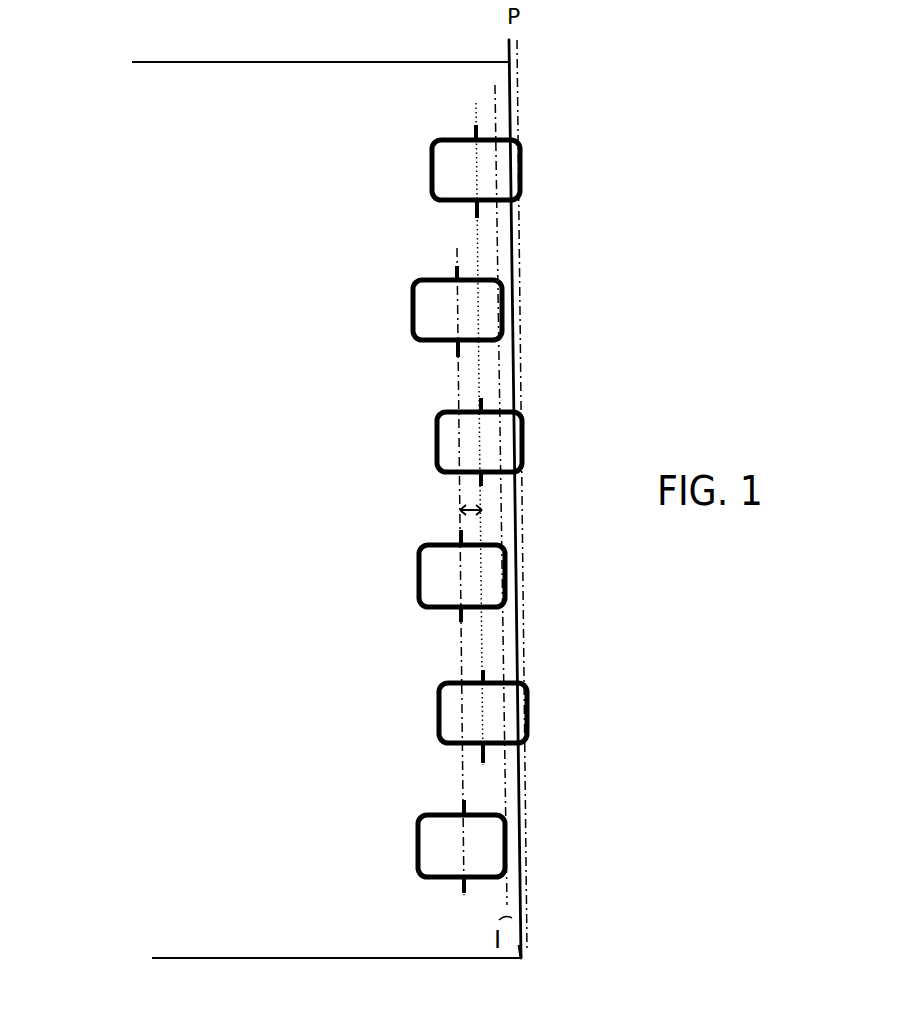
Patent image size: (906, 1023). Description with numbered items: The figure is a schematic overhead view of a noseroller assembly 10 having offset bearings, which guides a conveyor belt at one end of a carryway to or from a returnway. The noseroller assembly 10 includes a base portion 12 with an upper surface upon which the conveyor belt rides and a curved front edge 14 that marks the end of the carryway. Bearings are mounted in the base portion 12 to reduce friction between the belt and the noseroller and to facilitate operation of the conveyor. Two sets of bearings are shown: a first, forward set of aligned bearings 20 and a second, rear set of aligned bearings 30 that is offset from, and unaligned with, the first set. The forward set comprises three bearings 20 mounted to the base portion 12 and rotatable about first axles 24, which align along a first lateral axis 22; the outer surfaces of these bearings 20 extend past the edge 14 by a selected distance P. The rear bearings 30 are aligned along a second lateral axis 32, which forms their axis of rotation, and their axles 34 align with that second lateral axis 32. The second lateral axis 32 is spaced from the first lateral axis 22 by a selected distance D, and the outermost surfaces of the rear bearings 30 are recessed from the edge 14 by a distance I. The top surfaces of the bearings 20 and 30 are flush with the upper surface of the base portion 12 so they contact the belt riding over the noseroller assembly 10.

The noseroller assembly 10 is at (102, 258).
The base portion 12 is at (283, 95).
The curved front edge 14 is at (525, 958).
The first set of aligned bearings 20 is at (432, 172).
The first lateral axis 22 is at (470, 112).
The first axles 24 is at (472, 130).
The second set of aligned bearings 30 is at (413, 310).
The second lateral axis 32 is at (458, 383).
The second axles 34 is at (455, 272).